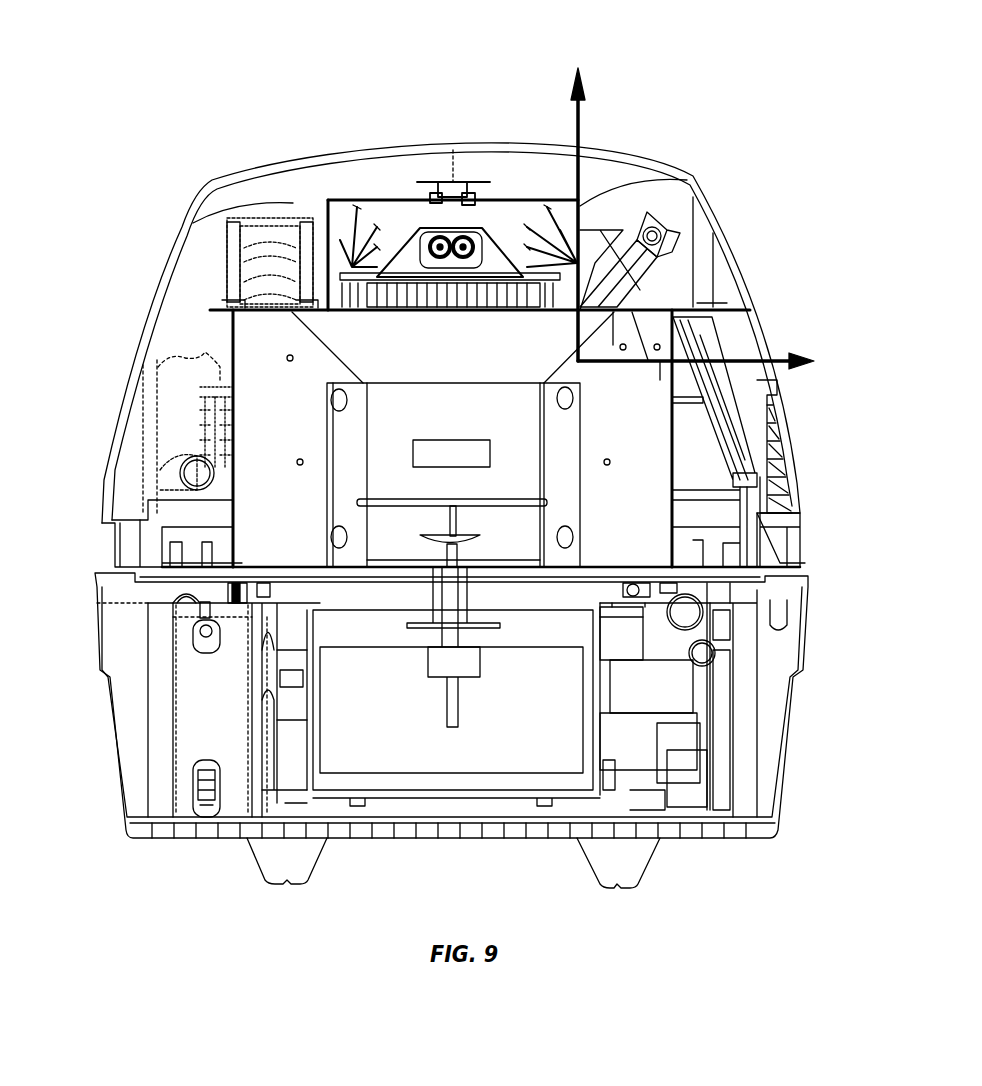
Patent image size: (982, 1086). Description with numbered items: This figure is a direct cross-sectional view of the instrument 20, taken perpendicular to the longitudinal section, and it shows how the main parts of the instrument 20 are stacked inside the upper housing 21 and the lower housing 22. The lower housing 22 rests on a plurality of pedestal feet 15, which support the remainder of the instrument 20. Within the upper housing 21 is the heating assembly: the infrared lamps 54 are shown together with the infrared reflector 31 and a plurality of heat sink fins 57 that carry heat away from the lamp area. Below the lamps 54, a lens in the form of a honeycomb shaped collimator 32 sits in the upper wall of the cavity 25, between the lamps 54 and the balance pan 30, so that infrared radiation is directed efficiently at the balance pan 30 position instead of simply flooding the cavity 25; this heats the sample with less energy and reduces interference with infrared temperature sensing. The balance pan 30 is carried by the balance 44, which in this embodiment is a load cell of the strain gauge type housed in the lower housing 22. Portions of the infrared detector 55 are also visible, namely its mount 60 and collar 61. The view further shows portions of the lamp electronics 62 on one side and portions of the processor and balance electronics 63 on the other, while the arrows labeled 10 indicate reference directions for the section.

The coordinate axis indicator 10 is at (705, 206).
The pedestal feet 15 is at (303, 850).
The instrument 20 is at (140, 188).
The upper housing 21 is at (163, 292).
The lower housing 22 is at (105, 705).
The cavity 25 is at (421, 421).
The balance pan 30 is at (480, 540).
The infrared reflector 31 is at (500, 247).
The collimator 32 is at (477, 310).
The balance 44 is at (537, 736).
The infrared lamps 54 is at (423, 237).
The infrared detector 55 is at (690, 218).
The heat sink fins 57 is at (352, 204).
The mount 60 is at (640, 340).
The collar 61 is at (680, 262).
The lamp electronics 62 is at (188, 446).
The processor and balance electronics 63 is at (752, 733).